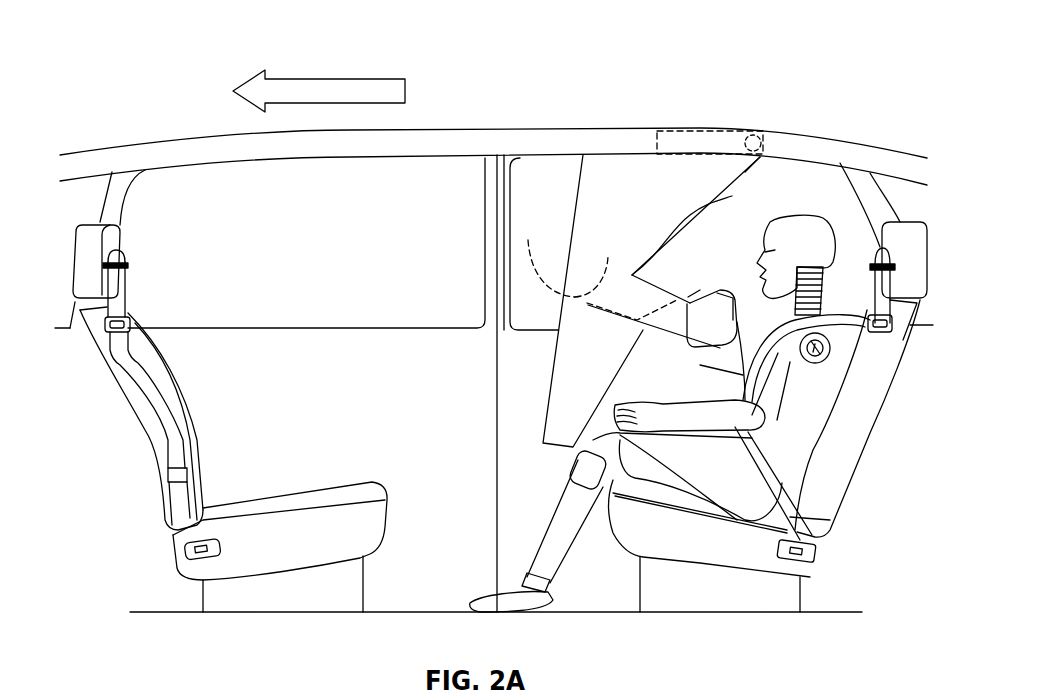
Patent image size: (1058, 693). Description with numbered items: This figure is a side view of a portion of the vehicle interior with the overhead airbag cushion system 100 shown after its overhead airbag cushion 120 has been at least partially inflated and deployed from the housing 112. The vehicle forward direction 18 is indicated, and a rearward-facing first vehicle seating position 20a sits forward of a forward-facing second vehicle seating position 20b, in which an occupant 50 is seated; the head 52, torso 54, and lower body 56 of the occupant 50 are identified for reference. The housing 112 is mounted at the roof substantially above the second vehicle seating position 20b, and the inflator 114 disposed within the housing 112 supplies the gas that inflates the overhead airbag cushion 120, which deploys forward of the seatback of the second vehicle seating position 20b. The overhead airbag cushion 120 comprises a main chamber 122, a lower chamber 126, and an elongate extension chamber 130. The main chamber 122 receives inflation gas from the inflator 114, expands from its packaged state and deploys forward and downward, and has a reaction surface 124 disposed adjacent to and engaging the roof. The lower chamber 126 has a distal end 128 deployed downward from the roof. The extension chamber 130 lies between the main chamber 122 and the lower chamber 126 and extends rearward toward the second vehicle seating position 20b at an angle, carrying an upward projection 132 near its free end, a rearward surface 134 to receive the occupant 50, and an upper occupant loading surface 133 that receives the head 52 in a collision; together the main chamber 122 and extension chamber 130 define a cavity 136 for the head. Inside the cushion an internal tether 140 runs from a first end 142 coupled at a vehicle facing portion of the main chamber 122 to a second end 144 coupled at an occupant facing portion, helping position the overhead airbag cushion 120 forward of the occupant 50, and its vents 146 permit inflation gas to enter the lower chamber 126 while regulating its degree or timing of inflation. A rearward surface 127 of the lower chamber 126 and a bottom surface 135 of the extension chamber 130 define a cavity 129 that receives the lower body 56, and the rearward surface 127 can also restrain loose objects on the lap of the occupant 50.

The vehicle forward direction 18 is at (350, 78).
The first vehicle seating position 20a is at (183, 390).
The second vehicle seating position 20b is at (779, 352).
The occupant 50 is at (682, 319).
The head 52 is at (874, 246).
The torso 54 is at (634, 388).
The lower body 56 is at (560, 522).
The overhead airbag cushion system 100 is at (631, 226).
The housing 112 is at (712, 128).
The inflator 114 is at (758, 137).
The overhead airbag cushion 120 is at (631, 247).
The main chamber 122 is at (596, 205).
The reaction surface 124 is at (611, 152).
The lower chamber 126 is at (563, 418).
The rearward surface 127 is at (810, 580).
The distal end 128 is at (560, 458).
The cavity 129 is at (827, 500).
The extension chamber 130 is at (667, 330).
The upward projection 132 is at (717, 293).
The upper occupant loading surface 133 is at (720, 208).
The rearward surface 134 is at (668, 240).
The bottom surface 135 is at (747, 382).
The cavity 136 is at (770, 180).
The internal tether 140 is at (626, 275).
The first end 142 is at (542, 254).
The second end 144 is at (688, 297).
The vents 146 is at (616, 322).